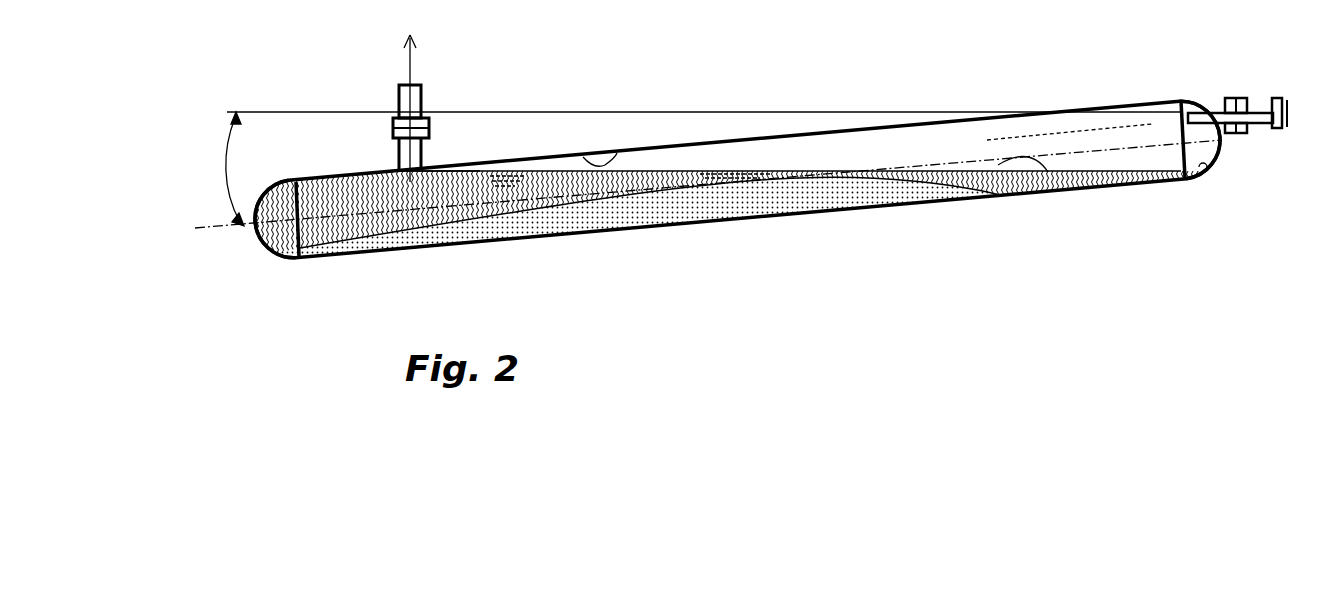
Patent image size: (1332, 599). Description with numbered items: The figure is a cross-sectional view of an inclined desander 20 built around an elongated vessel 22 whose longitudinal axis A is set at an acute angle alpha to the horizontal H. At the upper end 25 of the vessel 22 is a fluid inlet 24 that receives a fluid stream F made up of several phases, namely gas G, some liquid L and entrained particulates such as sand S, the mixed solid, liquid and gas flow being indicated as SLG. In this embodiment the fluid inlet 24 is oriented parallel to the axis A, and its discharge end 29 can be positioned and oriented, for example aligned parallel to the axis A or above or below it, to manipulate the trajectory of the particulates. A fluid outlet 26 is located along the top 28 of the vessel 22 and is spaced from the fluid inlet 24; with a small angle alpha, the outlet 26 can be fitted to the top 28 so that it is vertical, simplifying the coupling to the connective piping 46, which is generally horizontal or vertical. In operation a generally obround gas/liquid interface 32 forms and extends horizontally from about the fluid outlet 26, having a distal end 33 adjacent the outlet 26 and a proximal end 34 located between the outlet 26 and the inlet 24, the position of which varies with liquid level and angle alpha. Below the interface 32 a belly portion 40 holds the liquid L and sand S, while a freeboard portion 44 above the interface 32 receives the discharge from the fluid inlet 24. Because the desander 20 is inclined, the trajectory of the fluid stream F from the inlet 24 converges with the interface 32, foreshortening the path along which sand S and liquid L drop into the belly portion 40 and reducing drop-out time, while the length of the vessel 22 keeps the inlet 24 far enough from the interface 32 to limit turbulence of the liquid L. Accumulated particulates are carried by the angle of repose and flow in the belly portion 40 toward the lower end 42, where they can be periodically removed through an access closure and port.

The desander 20 is at (832, 288).
The vessel 22 is at (652, 148).
The fluid inlet 24 is at (1227, 98).
The upper end 25 is at (1220, 160).
The fluid outlet 26 is at (394, 166).
The top 28 is at (583, 157).
The discharge end 29 is at (1172, 119).
The gas/liquid interface 32 is at (1048, 172).
The distal end 33 is at (472, 170).
The proximal end 34 is at (1208, 167).
The belly portion 40 is at (632, 208).
The lower end 42 is at (263, 248).
The freeboard portion 44 is at (793, 152).
The connective piping 46 is at (1288, 113).
The axis A is at (215, 229).
The horizontal H is at (260, 112).
The acute angle alpha is at (240, 169).
The gas G is at (412, 73).
The liquid L is at (350, 205).
The sand S is at (718, 212).
The fluid stream F is at (1270, 97).
The fluid stream phases SLG is at (1063, 128).